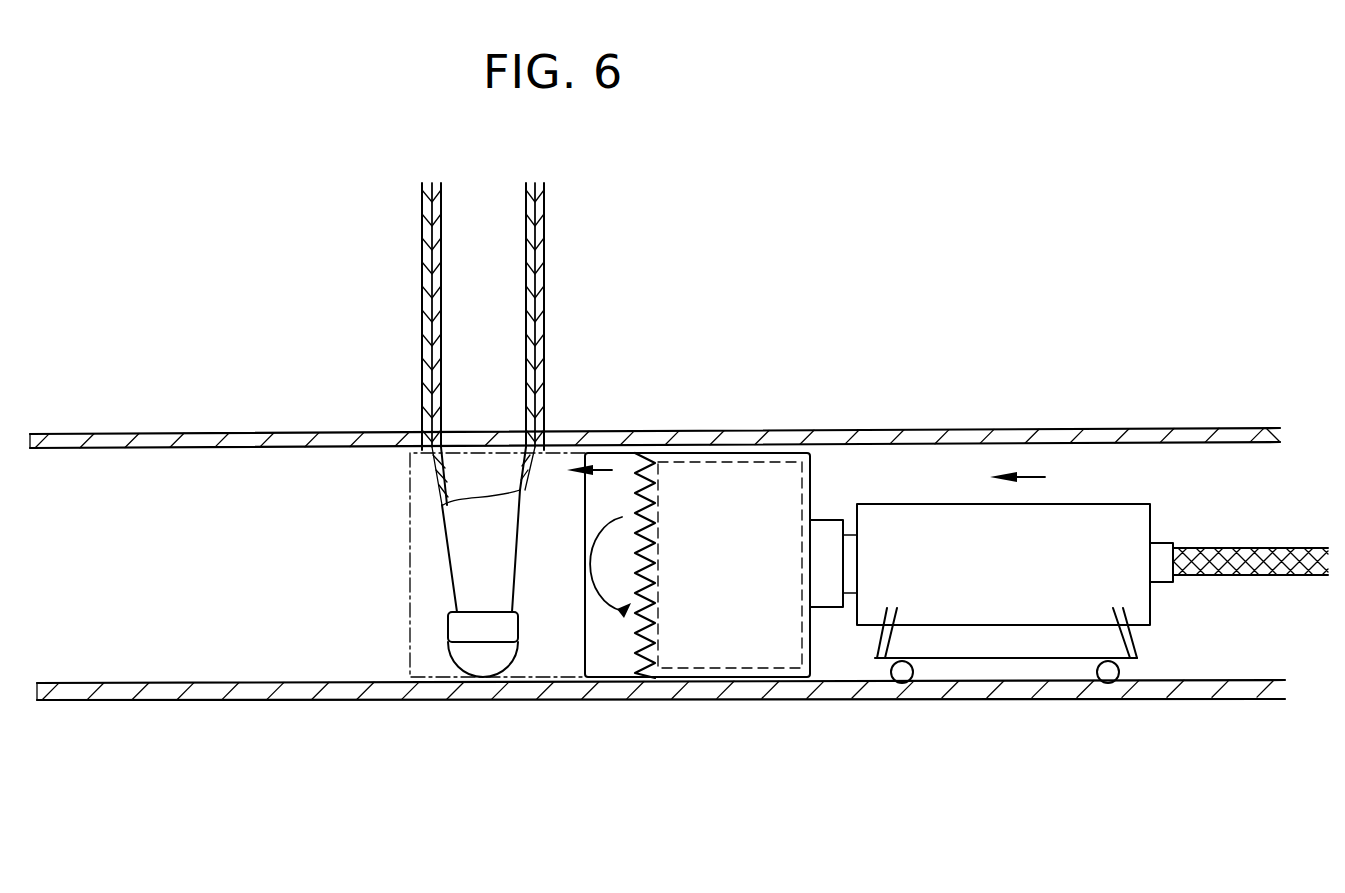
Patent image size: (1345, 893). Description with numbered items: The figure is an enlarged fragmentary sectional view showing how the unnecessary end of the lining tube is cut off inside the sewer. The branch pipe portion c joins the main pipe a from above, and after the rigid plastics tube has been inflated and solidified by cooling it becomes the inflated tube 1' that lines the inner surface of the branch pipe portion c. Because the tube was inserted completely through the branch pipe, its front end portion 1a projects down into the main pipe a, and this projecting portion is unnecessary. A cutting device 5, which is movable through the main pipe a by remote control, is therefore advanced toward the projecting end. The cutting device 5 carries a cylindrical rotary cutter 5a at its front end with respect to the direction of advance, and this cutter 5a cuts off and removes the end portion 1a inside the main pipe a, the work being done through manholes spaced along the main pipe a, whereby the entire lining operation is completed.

The inflated tube 1' is at (529, 344).
The branch pipe portion c is at (546, 318).
The main pipe a is at (1130, 429).
The front end portion 1a is at (455, 570).
The cylindrical rotary cutter 5a is at (727, 657).
The cutting device 5 is at (1010, 612).